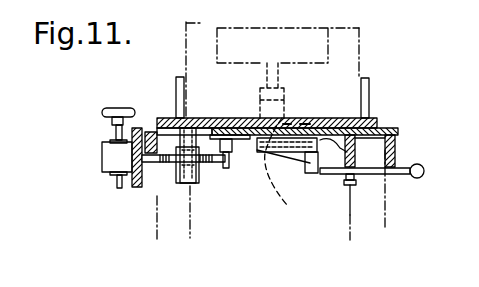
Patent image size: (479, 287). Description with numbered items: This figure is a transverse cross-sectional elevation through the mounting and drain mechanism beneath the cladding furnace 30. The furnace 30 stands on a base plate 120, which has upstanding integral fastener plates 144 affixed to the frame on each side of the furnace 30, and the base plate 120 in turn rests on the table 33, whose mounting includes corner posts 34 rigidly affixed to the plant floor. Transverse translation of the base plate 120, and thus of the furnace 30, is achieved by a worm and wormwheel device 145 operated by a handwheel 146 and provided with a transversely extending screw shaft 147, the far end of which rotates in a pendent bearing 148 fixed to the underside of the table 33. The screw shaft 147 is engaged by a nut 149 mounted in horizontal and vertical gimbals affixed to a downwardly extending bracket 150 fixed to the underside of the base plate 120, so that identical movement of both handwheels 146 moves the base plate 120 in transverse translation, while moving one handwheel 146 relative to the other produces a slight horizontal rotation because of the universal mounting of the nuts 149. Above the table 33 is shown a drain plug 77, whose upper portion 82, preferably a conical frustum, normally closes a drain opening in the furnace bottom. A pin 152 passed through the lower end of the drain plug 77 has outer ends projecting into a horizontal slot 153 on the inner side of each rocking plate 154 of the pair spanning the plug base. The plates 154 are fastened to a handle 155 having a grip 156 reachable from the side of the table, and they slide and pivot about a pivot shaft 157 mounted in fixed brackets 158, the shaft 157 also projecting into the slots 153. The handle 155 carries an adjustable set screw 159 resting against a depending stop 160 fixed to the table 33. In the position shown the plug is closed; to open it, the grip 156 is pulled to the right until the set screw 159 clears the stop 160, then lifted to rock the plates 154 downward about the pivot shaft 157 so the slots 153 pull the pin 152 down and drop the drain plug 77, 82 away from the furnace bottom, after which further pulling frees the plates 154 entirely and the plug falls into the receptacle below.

The furnace 30 is at (360, 52).
The upper portion of plug 82 is at (270, 56).
The drain plug 77 is at (250, 107).
The fastener plates 144 is at (176, 86).
The base plate 120 is at (377, 123).
The table 33 is at (398, 132).
The horizontal slot 153 is at (287, 120).
The pivot shaft 157 is at (306, 118).
The handwheel 146 is at (115, 107).
The worm and wormwheel device 145 is at (105, 158).
The screw shaft 147 is at (210, 163).
The nut 149 is at (177, 170).
The bracket 150 is at (178, 188).
The pendent bearing 148 is at (228, 150).
The rocking plate 154 is at (300, 162).
The pin 152 is at (294, 165).
The stop 160 is at (350, 160).
The fixed brackets 158 is at (385, 147).
The grip 156 is at (425, 168).
The handle 155 is at (372, 176).
The set screw 159 is at (357, 188).
The corner posts 34 is at (157, 206).